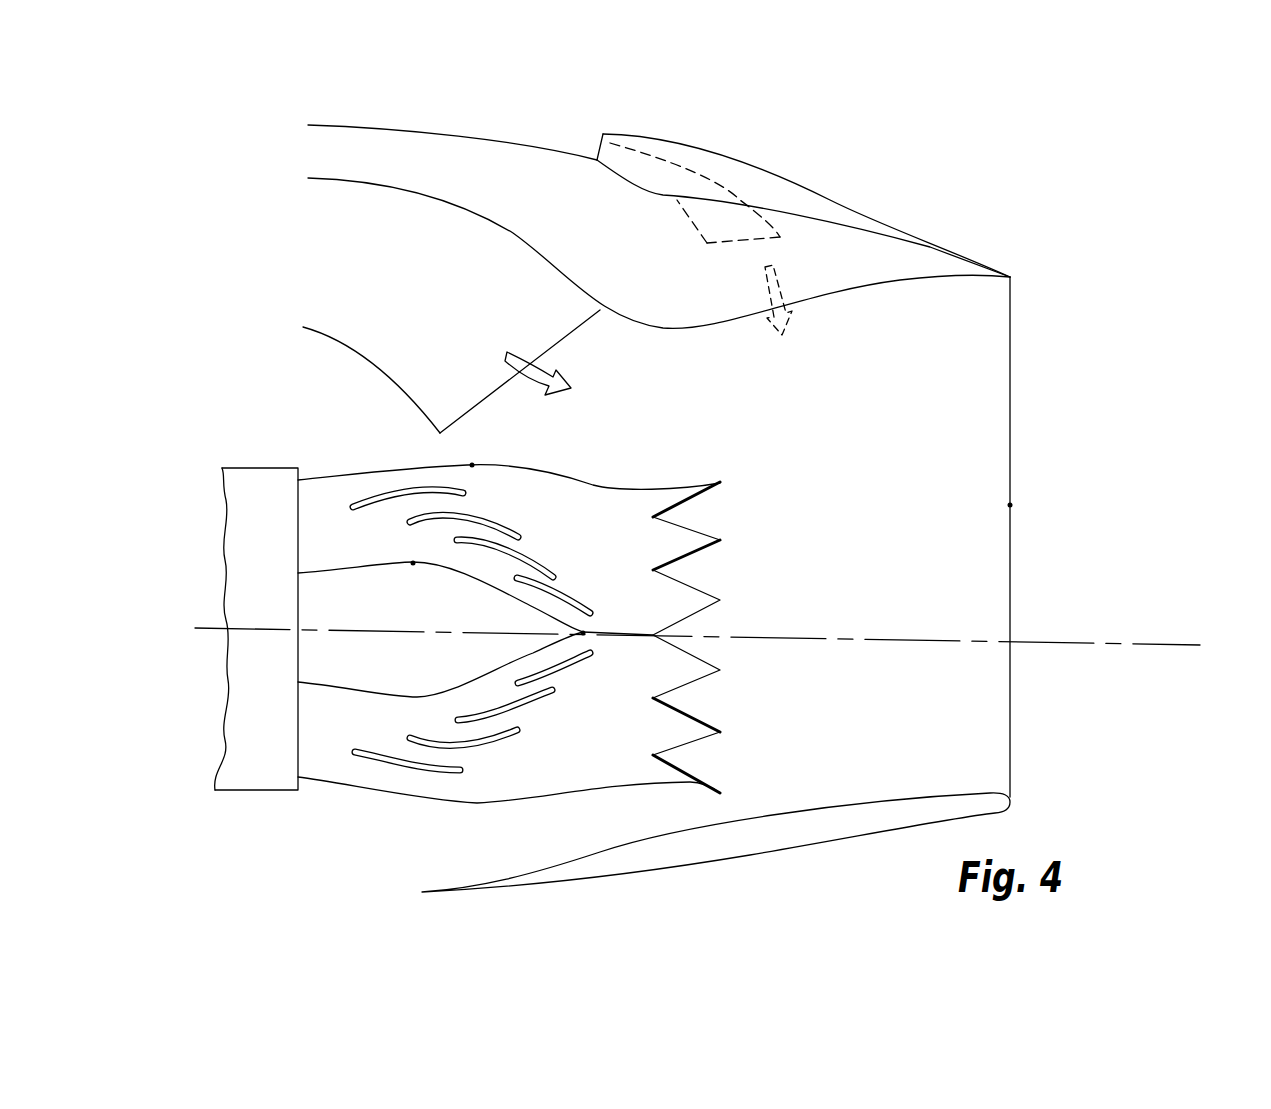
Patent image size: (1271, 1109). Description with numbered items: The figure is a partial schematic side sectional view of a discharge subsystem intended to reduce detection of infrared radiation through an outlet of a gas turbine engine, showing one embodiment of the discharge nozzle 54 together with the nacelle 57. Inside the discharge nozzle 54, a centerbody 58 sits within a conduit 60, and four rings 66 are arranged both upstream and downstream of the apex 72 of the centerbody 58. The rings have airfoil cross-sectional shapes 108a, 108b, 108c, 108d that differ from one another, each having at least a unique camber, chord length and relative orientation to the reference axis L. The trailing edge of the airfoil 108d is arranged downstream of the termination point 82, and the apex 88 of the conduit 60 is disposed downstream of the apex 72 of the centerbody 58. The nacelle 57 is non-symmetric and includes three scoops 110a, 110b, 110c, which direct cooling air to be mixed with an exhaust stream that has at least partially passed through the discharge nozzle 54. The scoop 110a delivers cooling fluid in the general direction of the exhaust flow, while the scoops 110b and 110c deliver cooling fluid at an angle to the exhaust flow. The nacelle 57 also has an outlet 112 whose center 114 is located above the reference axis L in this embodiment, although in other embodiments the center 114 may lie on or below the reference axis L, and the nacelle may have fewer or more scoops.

The discharge nozzle 54 is at (351, 831).
The nacelle 57 is at (1024, 223).
The centerbody 58 is at (328, 660).
The conduit 60 is at (548, 472).
The rings 66 is at (572, 510).
The apex of the centerbody 72 is at (413, 564).
The termination point 82 is at (584, 633).
The apex of the conduit 88 is at (472, 465).
The airfoil cross-sectional shape 108a is at (403, 773).
The airfoil cross-sectional shape 108b is at (504, 739).
The airfoil cross-sectional shape 108c is at (551, 695).
The airfoil cross-sectional shape 108d is at (591, 658).
The scoop 110a is at (447, 856).
The scoop 110b is at (325, 254).
The scoop 110c is at (597, 152).
The outlet 112 is at (1010, 372).
The center 114 is at (1010, 505).
The reference axis L is at (1194, 644).